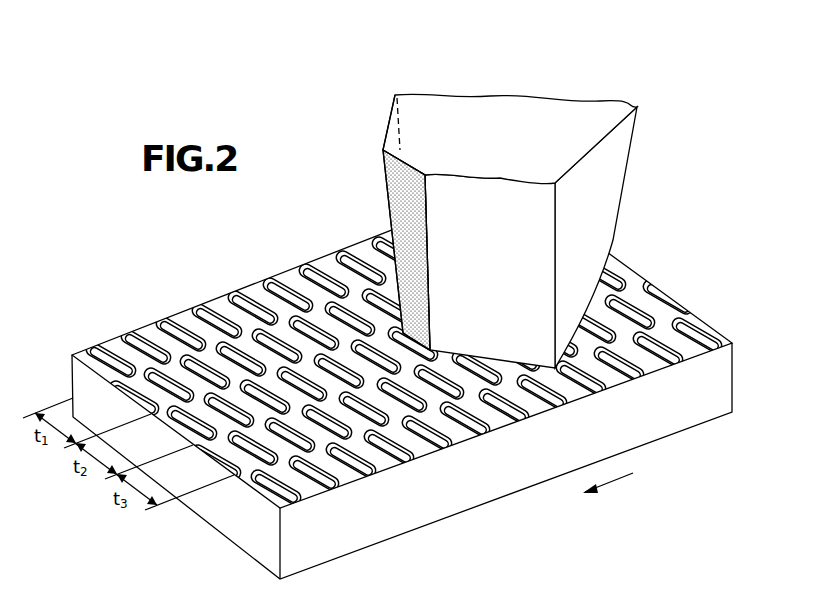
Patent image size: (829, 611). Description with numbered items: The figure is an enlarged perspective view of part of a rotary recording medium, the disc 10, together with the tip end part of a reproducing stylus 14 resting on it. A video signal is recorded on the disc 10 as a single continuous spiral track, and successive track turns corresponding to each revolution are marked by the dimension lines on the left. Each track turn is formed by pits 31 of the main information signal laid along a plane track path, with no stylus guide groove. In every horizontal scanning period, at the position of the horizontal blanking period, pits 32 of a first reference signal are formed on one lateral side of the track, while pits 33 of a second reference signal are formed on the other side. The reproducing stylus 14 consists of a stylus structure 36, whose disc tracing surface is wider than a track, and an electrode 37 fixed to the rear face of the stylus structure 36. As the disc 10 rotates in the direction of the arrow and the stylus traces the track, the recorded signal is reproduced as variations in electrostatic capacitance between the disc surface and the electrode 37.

The disc 10 is at (149, 322).
The reproducing stylus 14 is at (383, 133).
The pits of the main information signal 31 is at (238, 302).
The pits of a first reference signal 32 is at (298, 297).
The pits of a second reference signal 33 is at (165, 413).
The stylus structure 36 is at (612, 183).
The electrode 37 is at (395, 187).